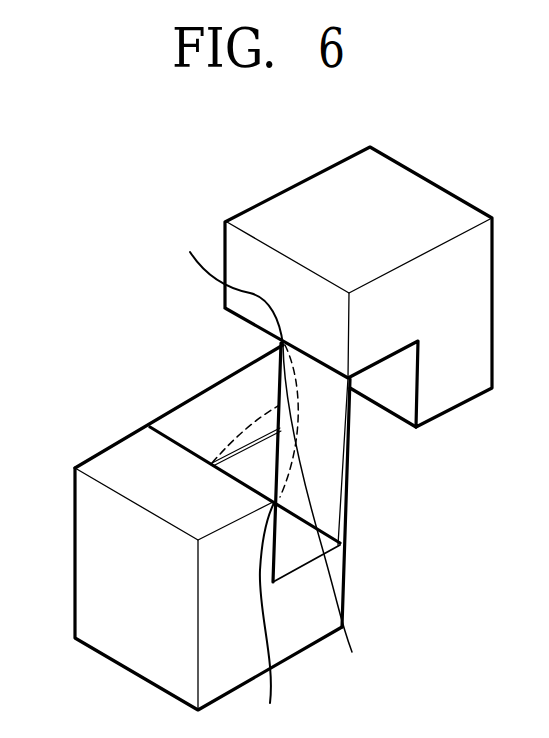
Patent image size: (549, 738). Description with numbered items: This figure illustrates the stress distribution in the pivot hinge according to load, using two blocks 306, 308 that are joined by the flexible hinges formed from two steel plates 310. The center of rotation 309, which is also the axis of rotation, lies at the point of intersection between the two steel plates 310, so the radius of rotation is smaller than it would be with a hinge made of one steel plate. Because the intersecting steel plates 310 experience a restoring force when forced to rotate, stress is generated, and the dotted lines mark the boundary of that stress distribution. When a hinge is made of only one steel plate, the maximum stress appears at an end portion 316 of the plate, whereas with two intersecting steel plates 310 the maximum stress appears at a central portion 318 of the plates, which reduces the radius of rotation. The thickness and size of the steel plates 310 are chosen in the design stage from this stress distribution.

The upper block 306 is at (417, 192).
The lower block 308 is at (122, 647).
The center of rotation 309 is at (328, 515).
The steel plate 310 is at (183, 418).
The end portion 316 is at (210, 460).
The central portion 318 is at (262, 406).